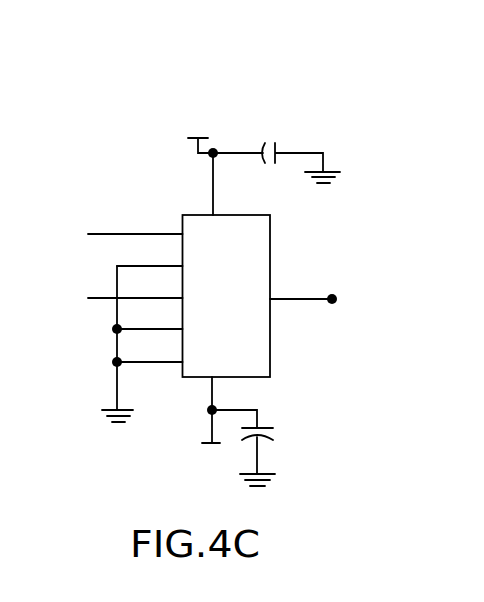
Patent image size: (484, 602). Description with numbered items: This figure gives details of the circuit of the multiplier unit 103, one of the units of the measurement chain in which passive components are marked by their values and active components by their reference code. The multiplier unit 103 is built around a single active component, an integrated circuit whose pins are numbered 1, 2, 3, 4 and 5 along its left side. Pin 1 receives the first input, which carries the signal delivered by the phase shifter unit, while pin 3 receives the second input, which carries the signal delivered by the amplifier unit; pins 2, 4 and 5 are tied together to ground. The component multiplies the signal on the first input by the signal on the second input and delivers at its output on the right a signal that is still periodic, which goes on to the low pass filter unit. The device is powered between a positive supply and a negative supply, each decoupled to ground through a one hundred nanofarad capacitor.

The multiplier unit 103 is at (228, 108).
The pin 1 is at (135, 224).
The pin 2 is at (150, 255).
The pin 3 is at (135, 288).
The pin 4 is at (150, 319).
The pin 5 is at (150, 350).